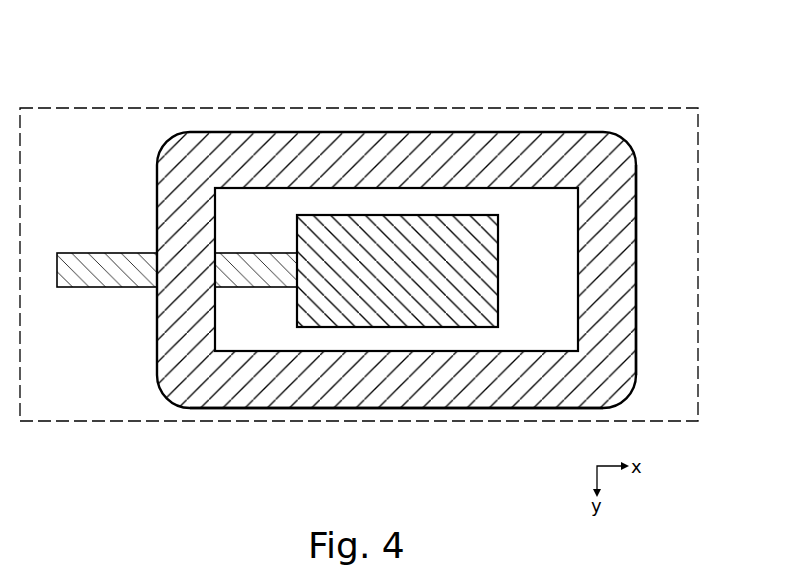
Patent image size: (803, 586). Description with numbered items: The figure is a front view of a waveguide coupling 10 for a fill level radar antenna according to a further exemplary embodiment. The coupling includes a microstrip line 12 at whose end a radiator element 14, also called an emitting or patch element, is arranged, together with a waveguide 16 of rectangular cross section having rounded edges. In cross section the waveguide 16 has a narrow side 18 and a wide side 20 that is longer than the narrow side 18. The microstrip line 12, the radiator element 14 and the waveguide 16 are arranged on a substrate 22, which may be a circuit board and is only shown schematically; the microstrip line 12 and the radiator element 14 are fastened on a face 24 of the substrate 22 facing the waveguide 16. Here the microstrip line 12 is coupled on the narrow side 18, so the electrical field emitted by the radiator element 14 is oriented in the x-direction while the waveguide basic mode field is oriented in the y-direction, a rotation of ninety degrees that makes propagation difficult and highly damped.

The waveguide coupling 10 is at (604, 88).
The microstrip line 12 is at (100, 288).
The radiator element 14 is at (481, 287).
The waveguide 16 is at (647, 223).
The narrow side 18 is at (636, 295).
The wide side 20 is at (490, 408).
The substrate 22 is at (64, 415).
The face 24 is at (143, 405).